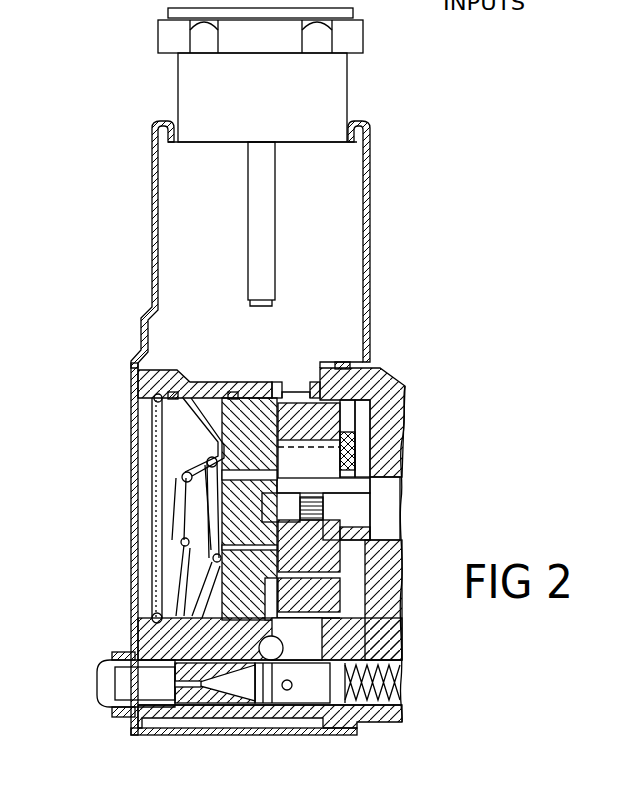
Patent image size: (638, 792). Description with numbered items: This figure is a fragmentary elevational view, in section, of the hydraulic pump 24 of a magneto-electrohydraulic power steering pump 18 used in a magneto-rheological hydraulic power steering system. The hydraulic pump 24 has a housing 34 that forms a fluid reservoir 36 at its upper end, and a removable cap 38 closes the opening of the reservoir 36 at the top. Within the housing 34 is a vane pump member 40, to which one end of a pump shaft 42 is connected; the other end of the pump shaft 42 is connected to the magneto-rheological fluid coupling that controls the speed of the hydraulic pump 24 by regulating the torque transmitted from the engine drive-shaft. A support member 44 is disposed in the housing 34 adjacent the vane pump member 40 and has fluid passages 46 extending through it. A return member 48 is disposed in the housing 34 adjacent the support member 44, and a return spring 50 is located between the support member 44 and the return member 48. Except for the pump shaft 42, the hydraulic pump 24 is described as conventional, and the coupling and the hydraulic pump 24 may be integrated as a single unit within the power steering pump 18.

The magneto-electrohydraulic power steering pump 18 is at (405, 214).
The hydraulic pump 24 is at (130, 497).
The housing 34 is at (131, 425).
The fluid reservoir 36 is at (188, 288).
The removable cap 38 is at (172, 38).
The vane pump member 40 is at (307, 418).
The pump shaft 42 is at (383, 518).
The support member 44 is at (238, 592).
The fluid passages 46 is at (216, 556).
The return member 48 is at (153, 620).
The return spring 50 is at (212, 499).